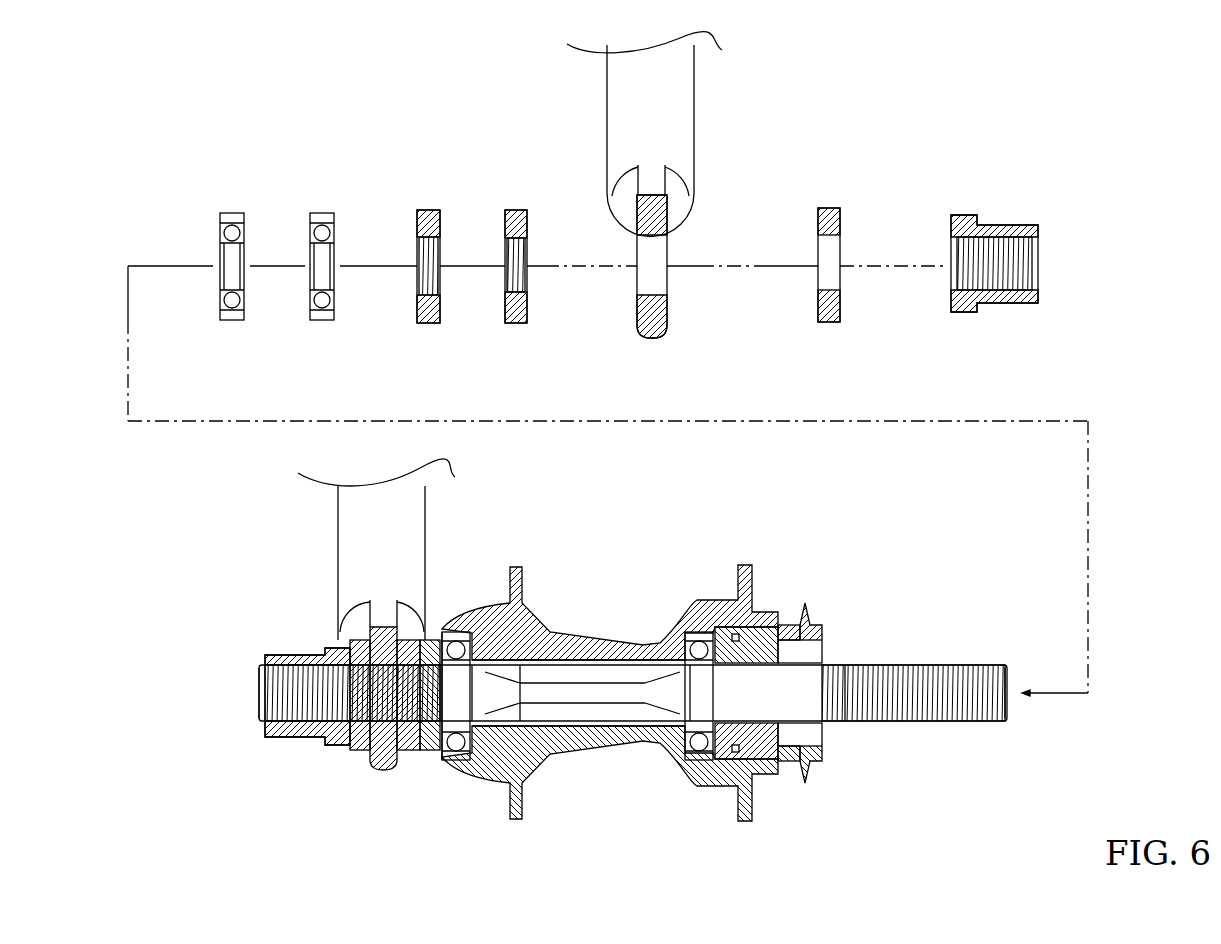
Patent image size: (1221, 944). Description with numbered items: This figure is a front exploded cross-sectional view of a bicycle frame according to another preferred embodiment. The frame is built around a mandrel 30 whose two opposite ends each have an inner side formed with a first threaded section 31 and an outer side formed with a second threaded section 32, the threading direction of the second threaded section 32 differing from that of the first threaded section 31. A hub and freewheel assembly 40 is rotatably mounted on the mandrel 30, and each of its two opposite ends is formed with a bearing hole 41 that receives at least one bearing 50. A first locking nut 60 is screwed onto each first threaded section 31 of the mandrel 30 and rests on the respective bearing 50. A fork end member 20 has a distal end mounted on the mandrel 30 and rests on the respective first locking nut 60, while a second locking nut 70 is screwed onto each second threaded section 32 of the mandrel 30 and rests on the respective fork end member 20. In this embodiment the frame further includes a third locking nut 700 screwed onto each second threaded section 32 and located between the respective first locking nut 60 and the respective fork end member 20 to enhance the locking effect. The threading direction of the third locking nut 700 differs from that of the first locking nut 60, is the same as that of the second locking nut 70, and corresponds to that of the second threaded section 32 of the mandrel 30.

The fork end member 20 is at (696, 137).
The mandrel 30 is at (1012, 705).
The first threaded section 31 is at (473, 697).
The second threaded section 32 is at (300, 737).
The hub and freewheel assembly 40 is at (613, 627).
The bearing hole 41 is at (458, 628).
The bearing 50 is at (320, 213).
The first locking nut 60 is at (432, 212).
The second locking nut 70 is at (967, 215).
The third locking nut 700 is at (511, 212).